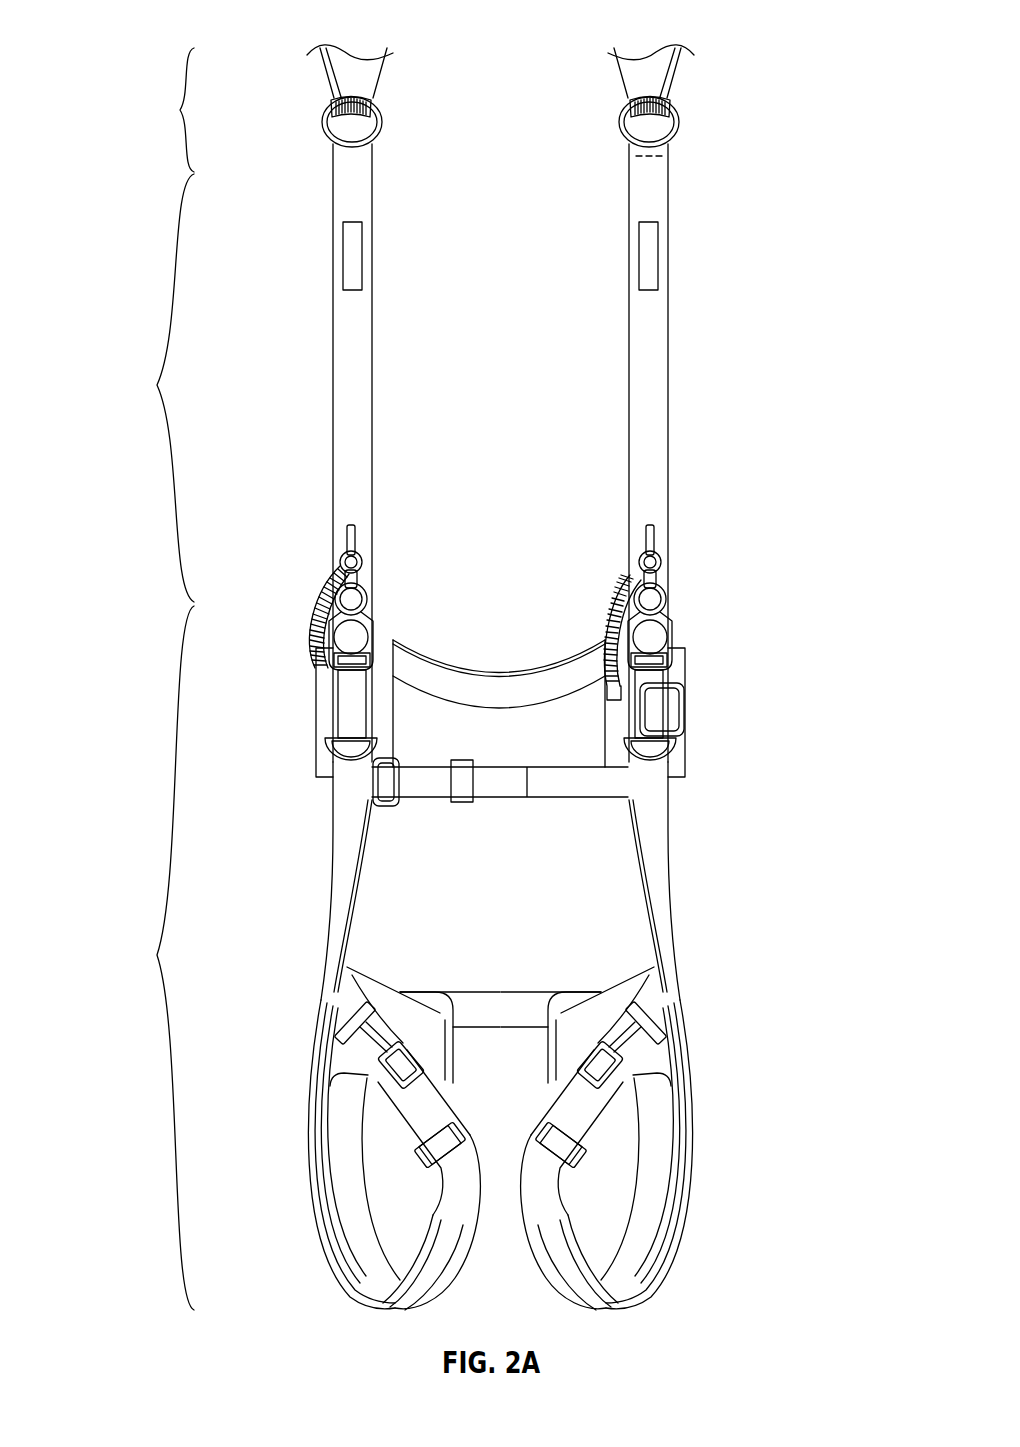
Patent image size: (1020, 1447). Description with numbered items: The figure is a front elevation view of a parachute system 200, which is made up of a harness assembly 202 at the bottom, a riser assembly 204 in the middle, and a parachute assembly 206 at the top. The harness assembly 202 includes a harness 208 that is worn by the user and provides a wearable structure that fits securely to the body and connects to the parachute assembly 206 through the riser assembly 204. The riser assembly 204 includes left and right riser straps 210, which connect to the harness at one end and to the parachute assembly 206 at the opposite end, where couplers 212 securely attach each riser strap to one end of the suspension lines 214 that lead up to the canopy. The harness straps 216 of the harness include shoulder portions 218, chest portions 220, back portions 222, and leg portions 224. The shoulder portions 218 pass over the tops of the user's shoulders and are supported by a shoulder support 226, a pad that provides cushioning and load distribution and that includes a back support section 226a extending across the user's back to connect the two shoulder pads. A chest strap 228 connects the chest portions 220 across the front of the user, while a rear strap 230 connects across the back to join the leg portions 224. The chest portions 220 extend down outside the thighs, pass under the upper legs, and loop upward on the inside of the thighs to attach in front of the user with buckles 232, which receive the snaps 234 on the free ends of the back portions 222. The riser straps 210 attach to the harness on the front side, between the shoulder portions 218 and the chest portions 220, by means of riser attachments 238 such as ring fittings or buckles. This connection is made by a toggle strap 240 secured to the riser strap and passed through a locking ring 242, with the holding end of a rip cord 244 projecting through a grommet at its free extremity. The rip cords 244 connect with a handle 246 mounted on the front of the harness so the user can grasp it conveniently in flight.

The parachute system 200 is at (224, 30).
The harness assembly 202 is at (150, 958).
The riser assembly 204 is at (151, 388).
The parachute assembly 206 is at (161, 110).
The harness 208 is at (660, 885).
The riser straps 210 is at (373, 356).
The couplers 212 is at (376, 149).
The suspension lines 214 is at (320, 76).
The harness straps 216 is at (376, 805).
The shoulder portions 218 is at (352, 688).
The chest portions 220 is at (332, 860).
The back portions 222 is at (372, 975).
The leg portions 224 is at (320, 1228).
The shoulder support 226 is at (316, 768).
The back support section 226a is at (488, 670).
The chest strap 228 is at (506, 800).
The rear strap 230 is at (502, 992).
The buckles 232 is at (452, 1010).
The snaps 234 is at (365, 1060).
The riser attachments 238 is at (373, 648).
The toggle strap 240 is at (356, 530).
The locking ring 242 is at (362, 562).
The rip cord 244 is at (612, 618).
The handle 246 is at (665, 712).